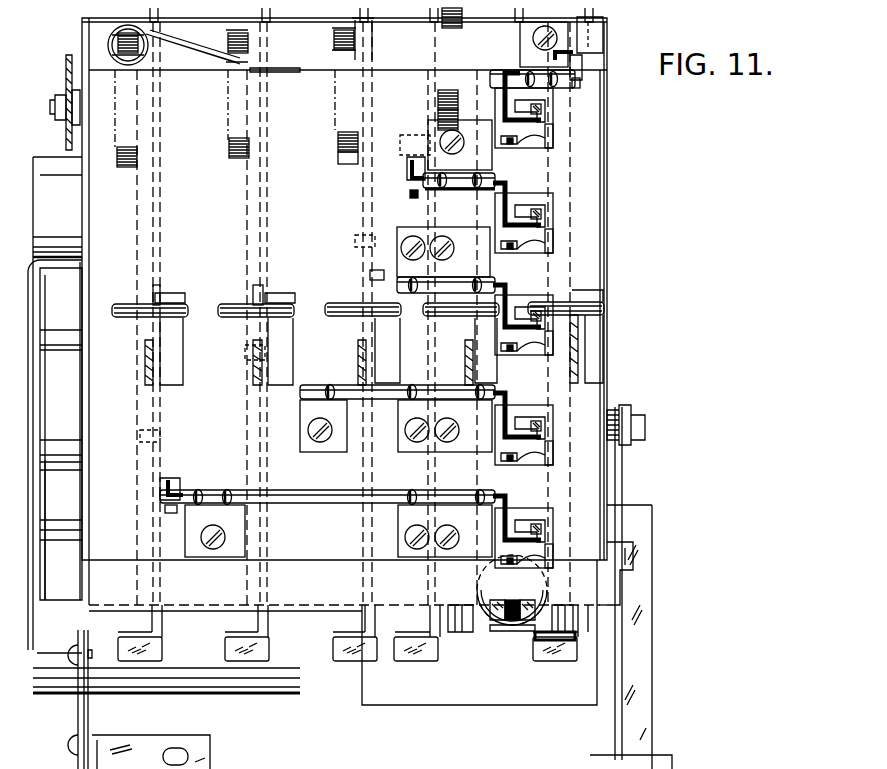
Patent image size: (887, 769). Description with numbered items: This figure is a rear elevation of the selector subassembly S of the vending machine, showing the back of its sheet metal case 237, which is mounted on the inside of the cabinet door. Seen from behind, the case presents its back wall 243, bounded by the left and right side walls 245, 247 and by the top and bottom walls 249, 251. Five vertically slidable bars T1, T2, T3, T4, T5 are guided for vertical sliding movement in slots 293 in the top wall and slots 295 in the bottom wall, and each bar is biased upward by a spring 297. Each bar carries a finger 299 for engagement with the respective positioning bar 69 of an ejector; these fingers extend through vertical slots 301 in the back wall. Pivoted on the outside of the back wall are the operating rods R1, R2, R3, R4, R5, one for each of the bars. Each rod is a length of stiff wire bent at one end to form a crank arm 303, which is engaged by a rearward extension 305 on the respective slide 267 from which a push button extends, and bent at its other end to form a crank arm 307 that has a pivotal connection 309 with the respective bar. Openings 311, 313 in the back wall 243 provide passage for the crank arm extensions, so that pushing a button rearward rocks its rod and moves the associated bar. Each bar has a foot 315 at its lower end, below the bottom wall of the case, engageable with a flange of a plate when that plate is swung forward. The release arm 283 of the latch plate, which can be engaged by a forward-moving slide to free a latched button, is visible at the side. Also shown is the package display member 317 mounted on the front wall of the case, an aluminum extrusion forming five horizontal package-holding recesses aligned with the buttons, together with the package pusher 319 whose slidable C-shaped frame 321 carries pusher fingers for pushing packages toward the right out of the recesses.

The selector subassembly S is at (55, 145).
The positioning bar 69 is at (145, 375).
The sheet metal case 237 is at (82, 38).
The back wall 243 is at (595, 185).
The left side wall 245 is at (607, 156).
The right side wall 247 is at (82, 188).
The top wall 249 is at (334, 40).
The bottom wall 251 is at (215, 598).
The slide 267 is at (505, 128).
The release arm 283 is at (632, 605).
The slot 293 is at (165, 35).
The slot 295 is at (160, 603).
The spring 297 is at (127, 167).
The finger 299 is at (118, 318).
The vertical slot 301 is at (180, 380).
The crank arm 303 is at (545, 122).
The rearward extension 305 is at (540, 112).
The crank arm 307 is at (590, 60).
The pivotal connection 309 is at (603, 30).
The opening 311 is at (552, 143).
The opening 313 is at (262, 328).
The foot 315 is at (162, 648).
The package display member 317 is at (55, 170).
The package pusher 319 is at (38, 310).
The C-shaped frame 321 is at (38, 405).
The vertically slidable bar T1 is at (565, 170).
The vertically slidable bar T2 is at (425, 90).
The vertically slidable bar T3 is at (368, 100).
The vertically slidable bar T4 is at (268, 193).
The vertically slidable bar T5 is at (160, 130).
The operating rod R1 is at (595, 68).
The operating rod R2 is at (505, 172).
The operating rod R3 is at (497, 280).
The operating rod R4 is at (360, 400).
The operating rod R5 is at (290, 495).